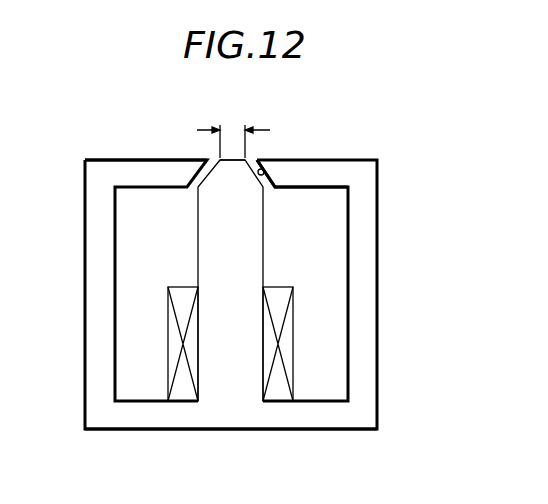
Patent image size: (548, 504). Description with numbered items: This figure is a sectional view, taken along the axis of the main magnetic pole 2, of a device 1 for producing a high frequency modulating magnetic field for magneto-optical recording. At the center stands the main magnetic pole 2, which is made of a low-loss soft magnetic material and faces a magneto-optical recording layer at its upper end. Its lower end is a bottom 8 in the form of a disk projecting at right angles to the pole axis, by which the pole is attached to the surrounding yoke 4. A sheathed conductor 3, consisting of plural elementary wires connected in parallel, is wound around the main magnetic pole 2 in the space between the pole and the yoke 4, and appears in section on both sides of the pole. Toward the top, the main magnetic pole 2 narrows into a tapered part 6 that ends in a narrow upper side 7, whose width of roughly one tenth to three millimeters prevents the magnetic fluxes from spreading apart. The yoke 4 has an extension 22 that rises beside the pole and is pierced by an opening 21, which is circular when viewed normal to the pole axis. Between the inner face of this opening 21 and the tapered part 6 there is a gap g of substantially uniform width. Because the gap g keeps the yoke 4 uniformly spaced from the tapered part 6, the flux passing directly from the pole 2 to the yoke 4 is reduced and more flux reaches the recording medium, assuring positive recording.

The device for producing a high frequency modulating magnetic field 1 is at (358, 153).
The main magnetic pole 2 is at (223, 358).
The sheathed conductor 3 is at (183, 342).
The yoke 4 is at (85, 255).
The tapered part 6 is at (275, 187).
The upper side 7 is at (228, 157).
The bottom 8 is at (318, 423).
The opening 21 is at (263, 170).
The extension 22 is at (133, 160).
The gap g is at (233, 130).